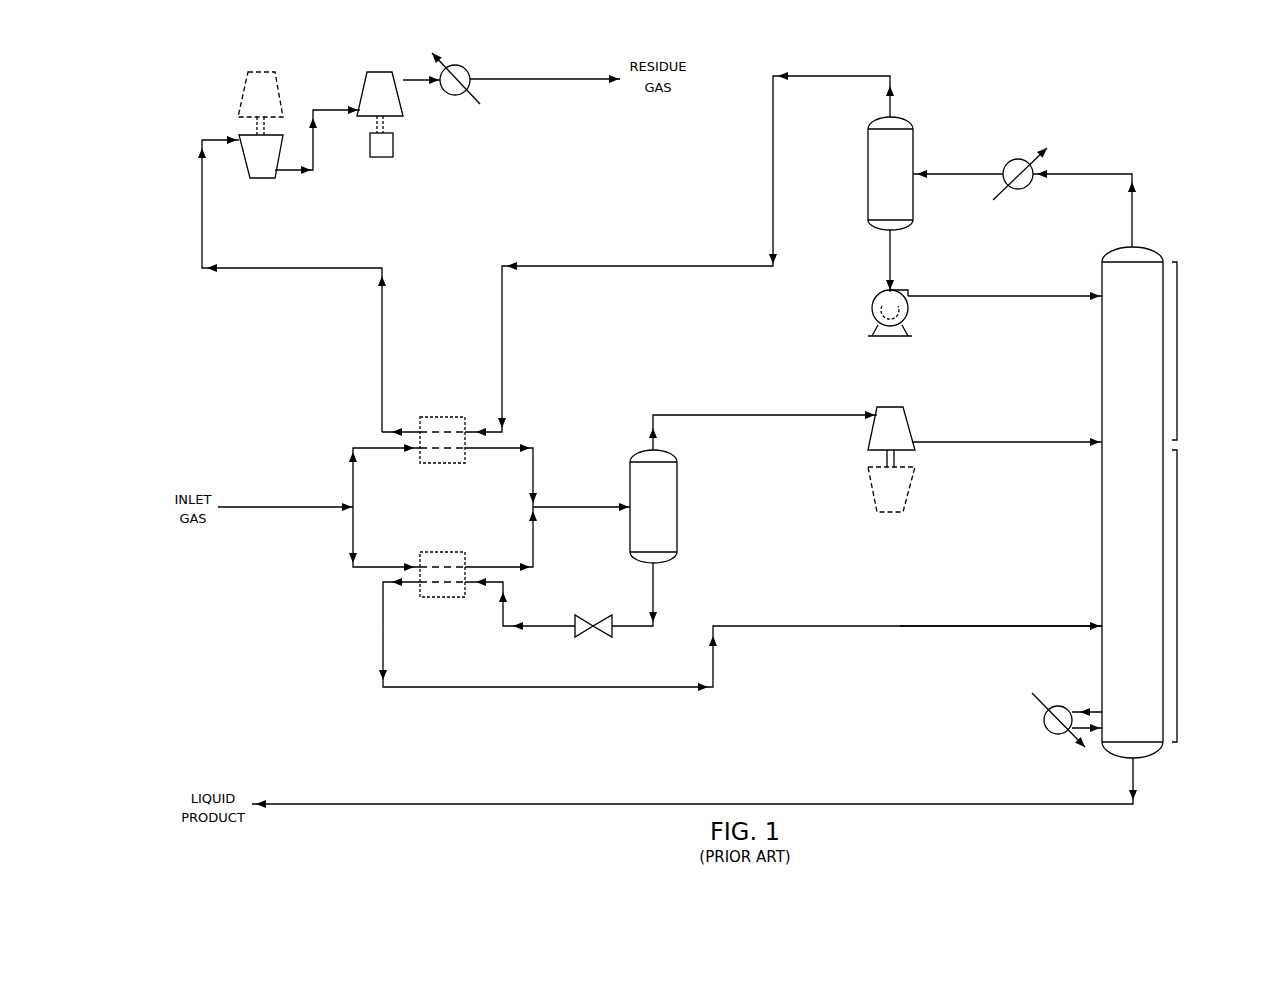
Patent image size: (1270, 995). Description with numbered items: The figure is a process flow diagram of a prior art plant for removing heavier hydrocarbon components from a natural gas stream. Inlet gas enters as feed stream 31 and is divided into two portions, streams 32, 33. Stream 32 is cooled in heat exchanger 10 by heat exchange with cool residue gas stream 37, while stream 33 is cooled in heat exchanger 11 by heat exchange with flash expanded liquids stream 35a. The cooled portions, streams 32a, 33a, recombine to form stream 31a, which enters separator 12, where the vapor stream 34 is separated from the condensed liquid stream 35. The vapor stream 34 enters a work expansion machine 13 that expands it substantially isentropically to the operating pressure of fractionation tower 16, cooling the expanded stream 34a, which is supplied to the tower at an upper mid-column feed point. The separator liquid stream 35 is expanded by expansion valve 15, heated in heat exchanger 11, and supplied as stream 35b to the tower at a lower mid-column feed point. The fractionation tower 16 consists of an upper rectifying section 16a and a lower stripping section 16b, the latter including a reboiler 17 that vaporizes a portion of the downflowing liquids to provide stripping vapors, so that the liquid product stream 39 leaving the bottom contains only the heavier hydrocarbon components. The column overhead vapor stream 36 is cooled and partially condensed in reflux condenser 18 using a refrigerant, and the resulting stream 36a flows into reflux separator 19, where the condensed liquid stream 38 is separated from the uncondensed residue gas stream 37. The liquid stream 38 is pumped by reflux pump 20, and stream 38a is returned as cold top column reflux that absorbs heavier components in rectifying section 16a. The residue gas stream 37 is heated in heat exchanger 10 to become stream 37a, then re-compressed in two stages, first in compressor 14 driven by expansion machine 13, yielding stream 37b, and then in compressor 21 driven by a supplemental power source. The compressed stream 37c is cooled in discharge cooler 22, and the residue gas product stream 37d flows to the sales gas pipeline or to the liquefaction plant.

The heat exchanger 10 is at (441, 416).
The heat exchanger 11 is at (441, 551).
The separator 12 is at (678, 505).
The work expansion machine 13 is at (261, 71).
The compressor 14 is at (263, 179).
The expansion valve 15 is at (606, 620).
The fractionation tower 16 is at (1101, 502).
The rectifying section 16a is at (1179, 352).
The stripping section 16b is at (1179, 592).
The reboiler 17 is at (1044, 721).
The reflux condenser 18 is at (1030, 185).
The reflux separator 19 is at (867, 176).
The reflux pump 20 is at (878, 293).
The compressor 21 is at (379, 71).
The discharge cooler 22 is at (447, 91).
The inlet gas stream 31 is at (230, 507).
The recombined feed stream 31a is at (585, 510).
The first feed portion 32 is at (354, 475).
The cooled first feed portion 32a is at (532, 476).
The second feed portion 33 is at (354, 535).
The cooled second feed portion 33a is at (532, 536).
The separator vapor stream 34 is at (770, 417).
The expanded stream 34a is at (1012, 445).
The separator liquid stream 35 is at (630, 629).
The flash expanded liquid stream 35a is at (548, 629).
The heated expanded liquid stream 35b is at (1012, 629).
The column overhead vapor stream 36 is at (1085, 177).
The partially condensed overhead stream 36a is at (965, 177).
The residue gas stream 37 is at (649, 268).
The heated residue gas stream 37a is at (292, 271).
The partially compressed residue gas stream 37b is at (314, 147).
The compressed residue gas stream 37c is at (410, 78).
The residue gas product stream 37d is at (584, 77).
The condensed liquid stream 38 is at (893, 256).
The reflux stream 38a is at (1012, 299).
The liquid product stream 39 is at (325, 807).